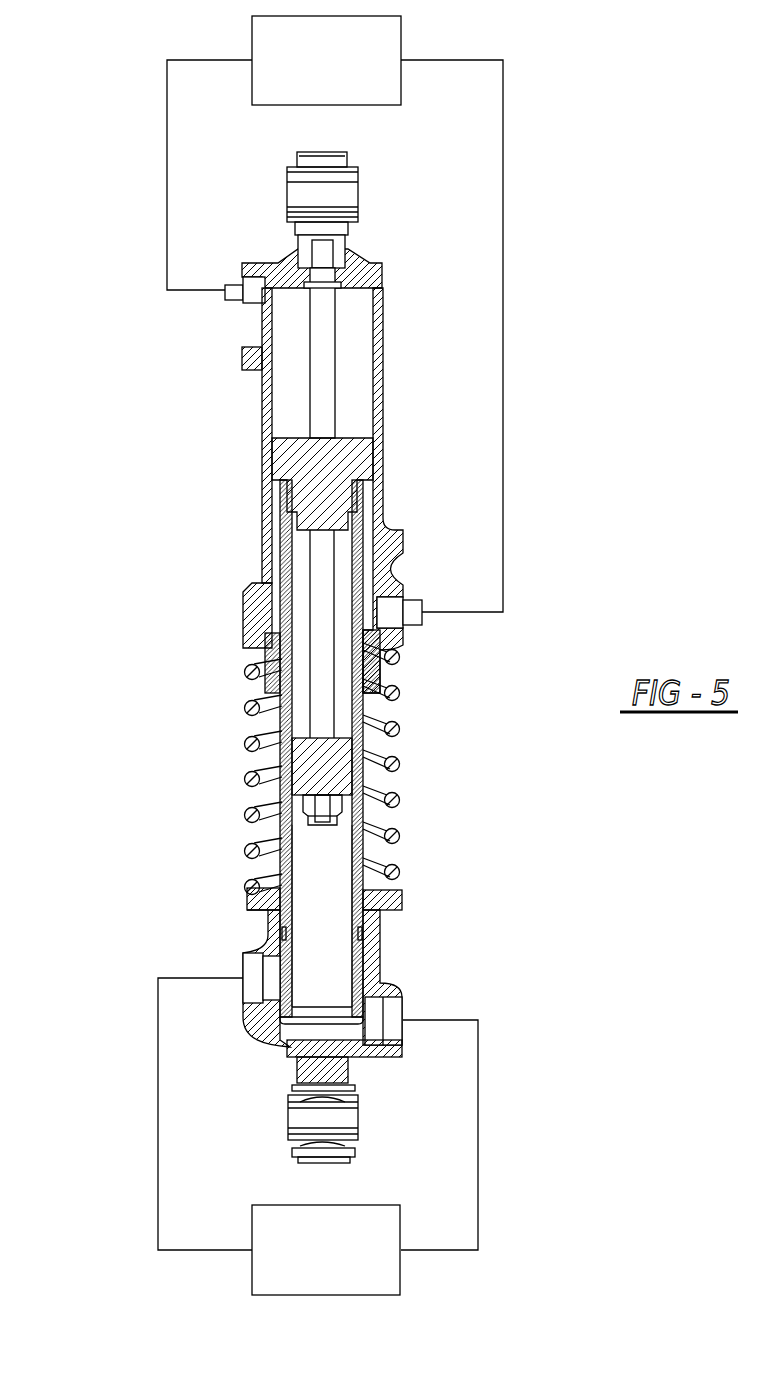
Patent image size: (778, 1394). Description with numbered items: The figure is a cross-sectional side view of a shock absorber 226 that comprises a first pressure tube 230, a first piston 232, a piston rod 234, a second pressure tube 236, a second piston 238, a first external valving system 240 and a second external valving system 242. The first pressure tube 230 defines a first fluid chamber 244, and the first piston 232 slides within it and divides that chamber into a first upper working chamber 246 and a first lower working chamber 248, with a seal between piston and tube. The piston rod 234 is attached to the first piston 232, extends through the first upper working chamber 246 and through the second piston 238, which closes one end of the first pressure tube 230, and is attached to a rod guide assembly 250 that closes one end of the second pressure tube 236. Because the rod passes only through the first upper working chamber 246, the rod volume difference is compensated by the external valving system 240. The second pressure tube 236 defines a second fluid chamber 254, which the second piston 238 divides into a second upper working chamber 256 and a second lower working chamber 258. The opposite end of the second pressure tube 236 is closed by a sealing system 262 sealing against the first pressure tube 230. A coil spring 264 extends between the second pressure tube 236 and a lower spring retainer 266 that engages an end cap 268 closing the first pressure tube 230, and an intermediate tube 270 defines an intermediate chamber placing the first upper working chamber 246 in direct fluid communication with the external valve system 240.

The shock absorber 226 is at (122, 145).
The first pressure tube 230 is at (357, 945).
The first piston 232 is at (317, 773).
The piston rod 234 is at (323, 362).
The second pressure tube 236 is at (372, 363).
The second piston 238 is at (338, 463).
The first external valving system 240 is at (357, 1205).
The second external valving system 242 is at (378, 107).
The first fluid chamber 244 is at (305, 695).
The first upper working chamber 246 is at (303, 613).
The first lower working chamber 248 is at (330, 877).
The rod guide assembly 250 is at (358, 277).
The second fluid chamber 254 is at (296, 336).
The second upper working chamber 256 is at (292, 418).
The second lower working chamber 258 is at (275, 518).
The sealing system 262 is at (367, 663).
The coil spring 264 is at (393, 763).
The lower spring retainer 266 is at (400, 900).
The end cap 268 is at (298, 1052).
The intermediate tube 270 is at (282, 838).